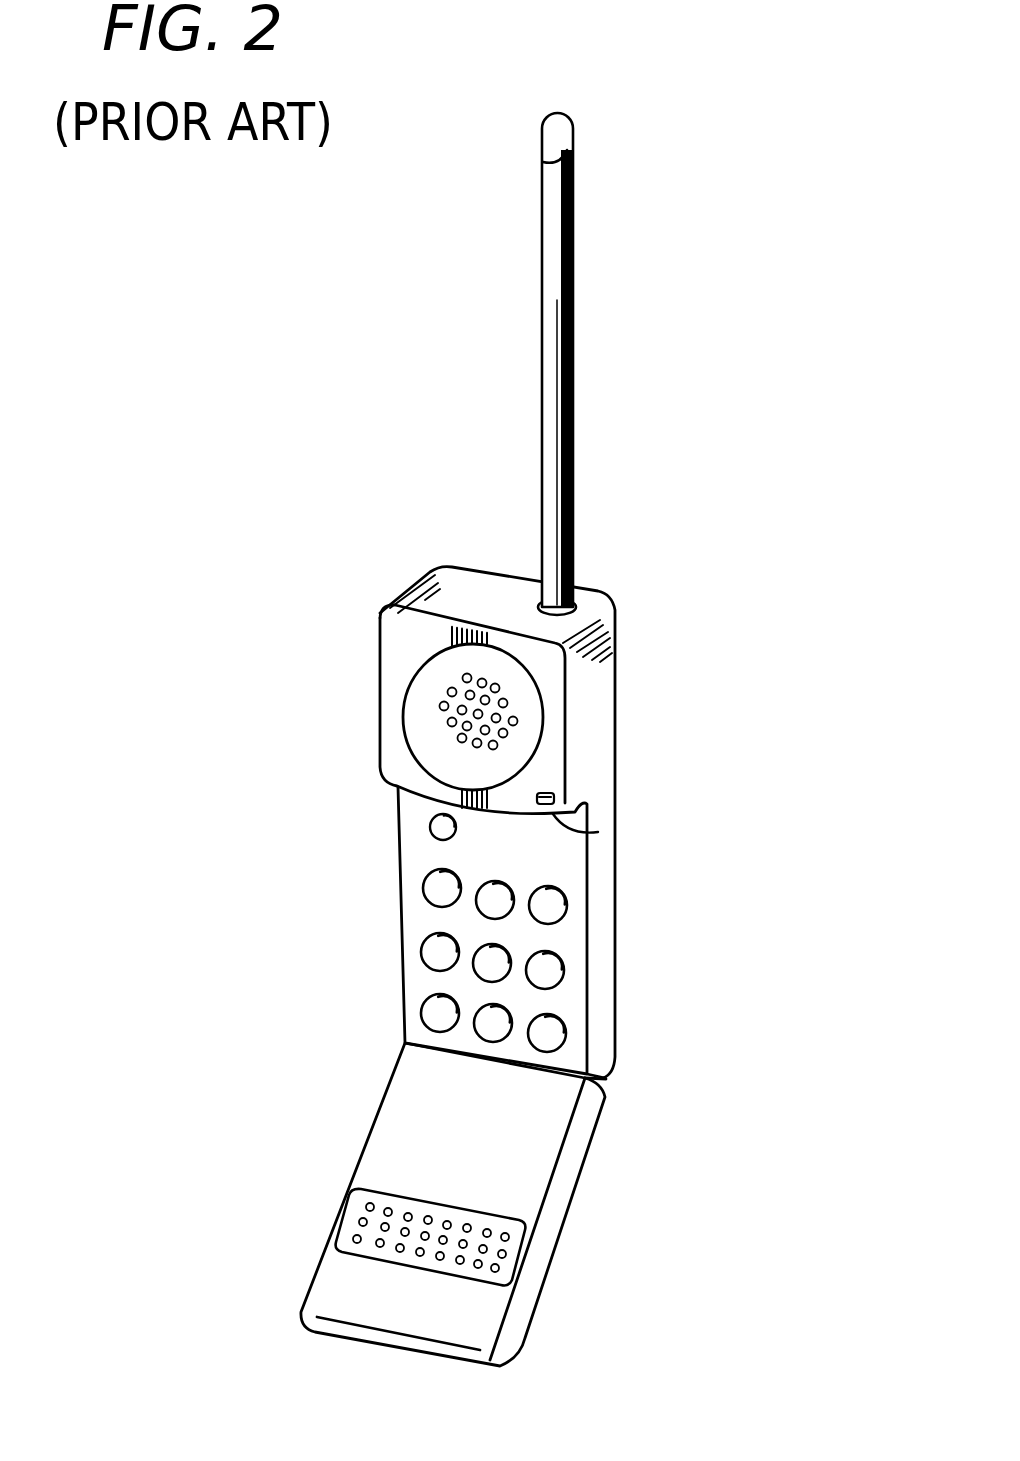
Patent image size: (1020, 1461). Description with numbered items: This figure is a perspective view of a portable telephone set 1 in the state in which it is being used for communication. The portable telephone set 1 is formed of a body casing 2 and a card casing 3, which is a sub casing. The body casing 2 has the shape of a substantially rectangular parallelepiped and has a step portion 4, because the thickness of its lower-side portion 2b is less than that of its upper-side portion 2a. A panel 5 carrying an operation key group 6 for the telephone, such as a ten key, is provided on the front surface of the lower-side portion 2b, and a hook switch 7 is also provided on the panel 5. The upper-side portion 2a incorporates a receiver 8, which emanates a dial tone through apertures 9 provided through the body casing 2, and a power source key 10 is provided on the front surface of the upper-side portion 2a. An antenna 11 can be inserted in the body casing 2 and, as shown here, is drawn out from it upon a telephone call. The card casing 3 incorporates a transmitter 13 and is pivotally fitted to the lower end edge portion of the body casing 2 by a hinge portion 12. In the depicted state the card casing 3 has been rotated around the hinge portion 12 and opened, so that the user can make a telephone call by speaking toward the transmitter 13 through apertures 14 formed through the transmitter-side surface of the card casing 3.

The portable telephone set 1 is at (417, 560).
The body casing 2 is at (396, 754).
The upper-side portion 2a is at (595, 702).
The lower-side portion 2b is at (603, 945).
The card casing 3 is at (548, 1223).
The step portion 4 is at (598, 832).
The panel 5 is at (570, 857).
The operation key group 6 is at (423, 895).
The hook switch 7 is at (429, 824).
The receiver 8 is at (517, 687).
The apertures 9 is at (442, 703).
The power source key 10 is at (550, 799).
The antenna 11 is at (572, 313).
The hinge portion 12 is at (610, 1078).
The transmitter 13 is at (505, 1267).
The apertures 14 is at (362, 1222).